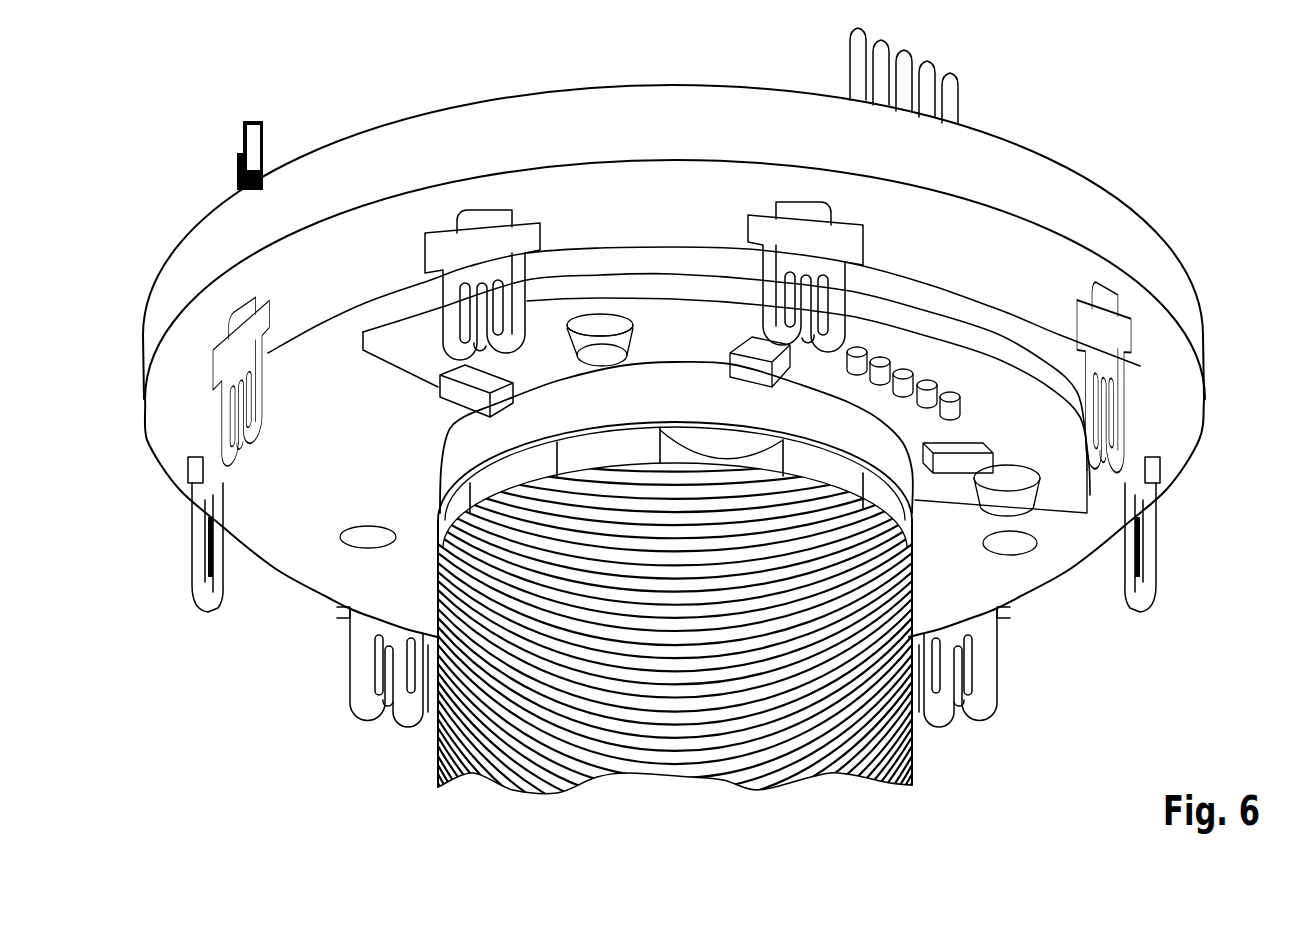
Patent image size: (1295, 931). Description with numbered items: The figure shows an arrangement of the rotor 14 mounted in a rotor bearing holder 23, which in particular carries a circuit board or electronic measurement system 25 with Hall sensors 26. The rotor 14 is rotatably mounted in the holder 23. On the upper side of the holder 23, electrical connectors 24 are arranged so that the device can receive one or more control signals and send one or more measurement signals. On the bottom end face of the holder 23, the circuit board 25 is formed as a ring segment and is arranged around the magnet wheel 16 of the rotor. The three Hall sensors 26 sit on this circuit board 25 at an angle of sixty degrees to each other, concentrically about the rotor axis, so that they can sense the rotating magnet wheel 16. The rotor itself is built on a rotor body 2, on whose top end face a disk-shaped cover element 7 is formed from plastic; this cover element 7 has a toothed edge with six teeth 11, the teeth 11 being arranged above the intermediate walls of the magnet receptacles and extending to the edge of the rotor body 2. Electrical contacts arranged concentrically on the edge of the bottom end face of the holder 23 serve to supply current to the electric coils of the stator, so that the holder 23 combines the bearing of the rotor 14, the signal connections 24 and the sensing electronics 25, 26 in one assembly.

The rotor body 2 is at (663, 757).
The cover element 7 is at (633, 447).
The teeth 11 is at (675, 505).
The rotor 14 is at (382, 760).
The magnet wheel 16 is at (688, 380).
The rotor bearing holder 23 is at (452, 122).
The electrical connectors 24 is at (848, 52).
The circuit board 25 is at (410, 362).
The Hall sensors 26 is at (453, 397).